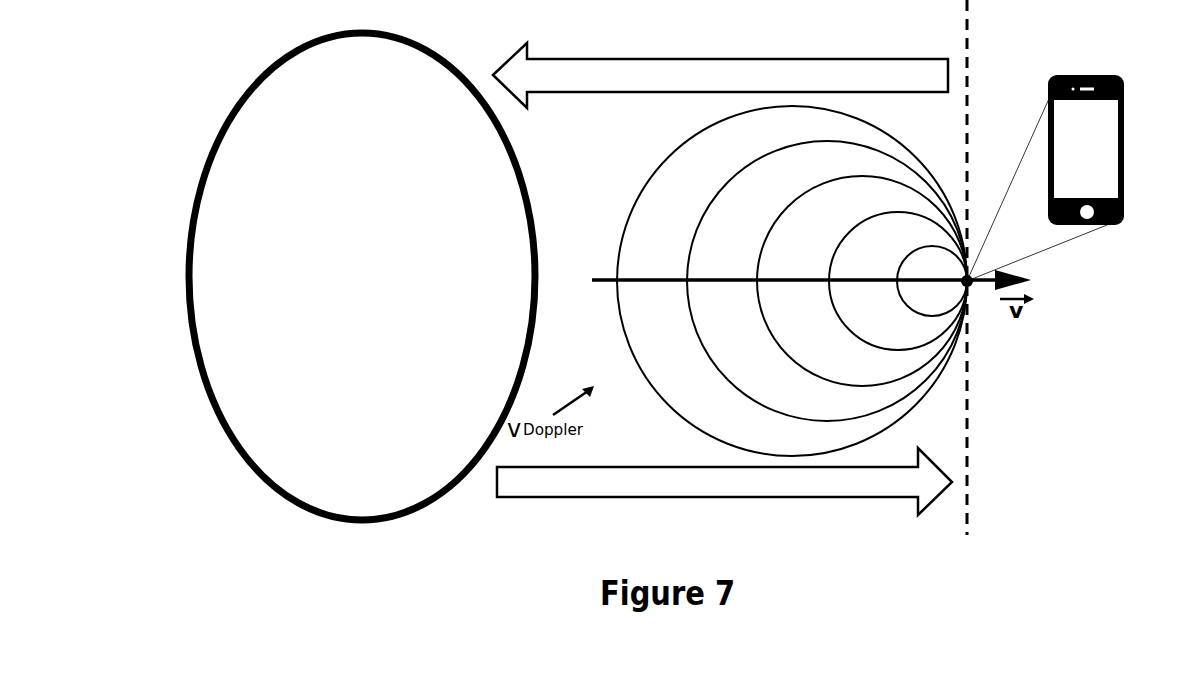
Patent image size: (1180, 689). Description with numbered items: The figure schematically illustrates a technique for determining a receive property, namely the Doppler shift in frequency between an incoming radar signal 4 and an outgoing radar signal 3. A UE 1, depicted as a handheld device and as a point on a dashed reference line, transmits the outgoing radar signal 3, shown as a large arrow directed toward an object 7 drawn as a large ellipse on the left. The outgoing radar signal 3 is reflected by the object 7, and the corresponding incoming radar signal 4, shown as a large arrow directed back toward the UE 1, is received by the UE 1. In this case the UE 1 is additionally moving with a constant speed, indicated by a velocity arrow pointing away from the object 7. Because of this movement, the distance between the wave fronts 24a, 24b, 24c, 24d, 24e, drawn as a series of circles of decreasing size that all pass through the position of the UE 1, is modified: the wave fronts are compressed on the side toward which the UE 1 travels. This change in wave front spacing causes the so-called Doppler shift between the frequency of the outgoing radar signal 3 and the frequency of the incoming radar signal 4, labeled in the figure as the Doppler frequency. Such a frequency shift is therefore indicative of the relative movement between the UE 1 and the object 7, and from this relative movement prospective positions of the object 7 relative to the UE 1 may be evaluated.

The UE 1 is at (1125, 212).
The outgoing radar signal 3 is at (622, 58).
The incoming radar signal 4 is at (610, 498).
The object 7 is at (217, 420).
The wave front 24a is at (655, 167).
The wave front 24b is at (738, 167).
The wave front 24c is at (820, 183).
The wave front 24d is at (878, 213).
The wave front 24e is at (918, 244).